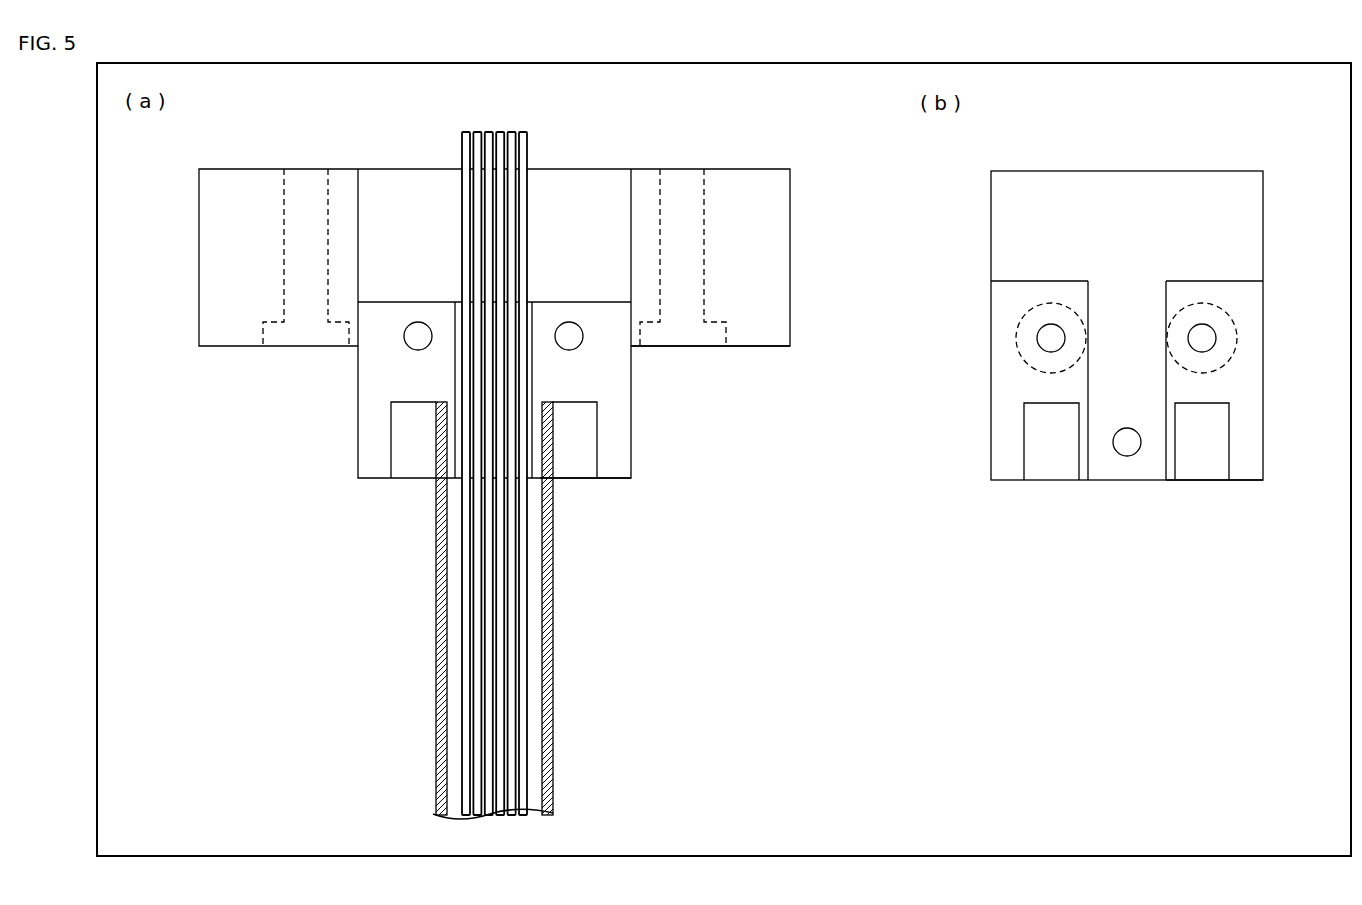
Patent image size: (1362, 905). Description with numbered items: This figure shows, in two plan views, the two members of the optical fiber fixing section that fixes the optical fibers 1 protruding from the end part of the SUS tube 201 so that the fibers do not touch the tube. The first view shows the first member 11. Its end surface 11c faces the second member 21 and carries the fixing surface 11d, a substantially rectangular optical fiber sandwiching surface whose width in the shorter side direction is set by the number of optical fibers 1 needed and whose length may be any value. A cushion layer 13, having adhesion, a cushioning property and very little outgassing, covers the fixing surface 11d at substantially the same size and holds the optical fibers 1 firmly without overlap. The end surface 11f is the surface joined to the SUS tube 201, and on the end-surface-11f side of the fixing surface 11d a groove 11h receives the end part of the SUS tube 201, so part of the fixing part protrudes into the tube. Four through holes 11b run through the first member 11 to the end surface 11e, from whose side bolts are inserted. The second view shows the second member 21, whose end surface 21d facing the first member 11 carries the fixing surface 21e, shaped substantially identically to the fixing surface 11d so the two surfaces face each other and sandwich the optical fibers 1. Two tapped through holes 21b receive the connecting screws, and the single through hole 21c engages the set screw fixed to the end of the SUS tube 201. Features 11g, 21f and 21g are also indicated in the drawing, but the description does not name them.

The optical fiber 1 is at (525, 152).
The first member 11 is at (792, 231).
The through hole 11b is at (284, 232).
The end surface 11c is at (600, 178).
The fixing surface 11d is at (533, 313).
The end surface 11e is at (755, 347).
The end surface 11f is at (617, 480).
The positioning hole 11g is at (411, 341).
The groove 11h is at (392, 457).
The cushion layer 13 is at (459, 323).
The SUS tube 201 is at (436, 598).
The second member 21 is at (1265, 232).
The through hole 21b is at (1035, 316).
The through hole 21c is at (1122, 450).
The end surface 21d is at (1157, 185).
The fixing surface 21e is at (1090, 298).
The end surface 21f is at (1245, 482).
The recess 21g is at (1175, 453).